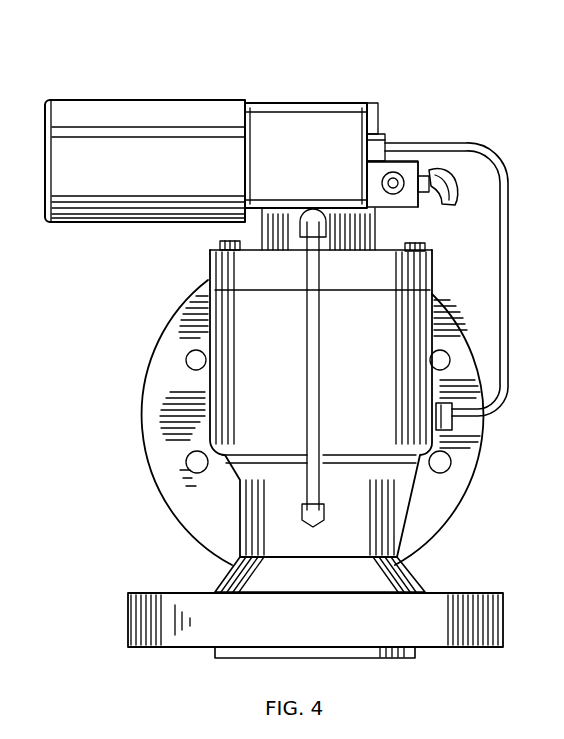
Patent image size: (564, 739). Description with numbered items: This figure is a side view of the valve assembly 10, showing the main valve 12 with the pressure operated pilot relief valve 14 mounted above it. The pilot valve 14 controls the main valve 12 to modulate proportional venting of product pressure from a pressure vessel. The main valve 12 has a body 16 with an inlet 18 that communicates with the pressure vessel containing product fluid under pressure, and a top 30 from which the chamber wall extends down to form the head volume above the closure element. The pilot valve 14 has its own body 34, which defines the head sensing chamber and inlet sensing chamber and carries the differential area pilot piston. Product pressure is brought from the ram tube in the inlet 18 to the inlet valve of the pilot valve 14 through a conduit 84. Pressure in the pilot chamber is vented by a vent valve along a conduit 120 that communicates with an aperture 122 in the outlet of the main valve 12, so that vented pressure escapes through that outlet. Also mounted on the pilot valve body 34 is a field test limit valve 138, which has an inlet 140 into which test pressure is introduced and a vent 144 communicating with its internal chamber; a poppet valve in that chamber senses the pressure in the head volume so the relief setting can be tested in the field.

The valve assembly 10 is at (128, 90).
The main valve 12 is at (175, 521).
The pilot relief valve 14 is at (312, 100).
The body 16 is at (365, 382).
The inlet 18 is at (378, 660).
The top 30 is at (370, 282).
The body 34 is at (364, 104).
The conduit 84 is at (510, 206).
The conduit 120 is at (318, 346).
The aperture 122 is at (447, 428).
The field test limit valve 138 is at (422, 204).
The inlet 140 is at (393, 190).
The vent 144 is at (455, 172).